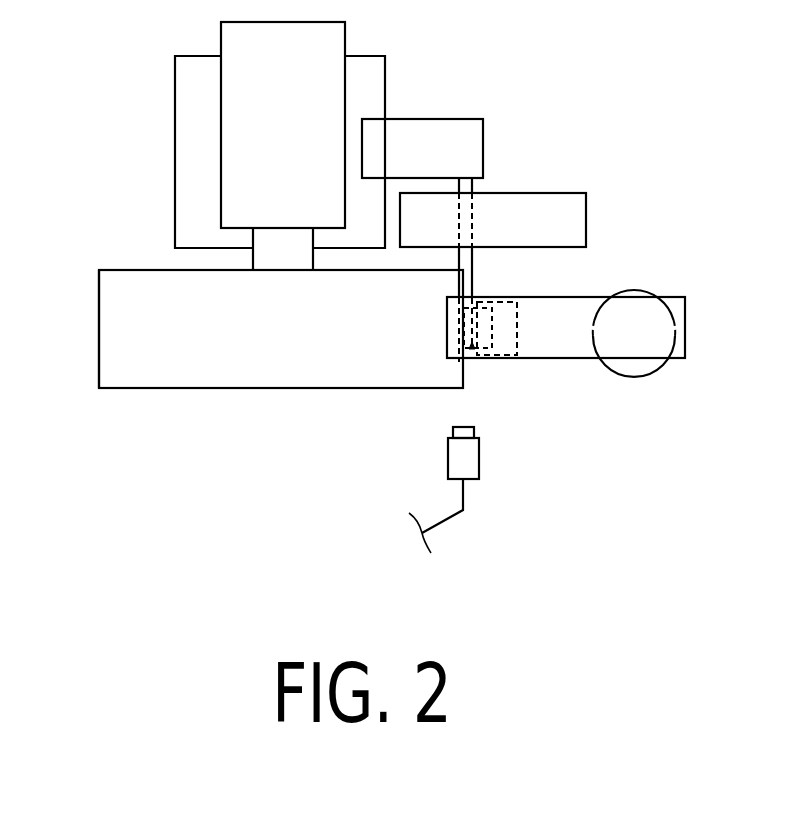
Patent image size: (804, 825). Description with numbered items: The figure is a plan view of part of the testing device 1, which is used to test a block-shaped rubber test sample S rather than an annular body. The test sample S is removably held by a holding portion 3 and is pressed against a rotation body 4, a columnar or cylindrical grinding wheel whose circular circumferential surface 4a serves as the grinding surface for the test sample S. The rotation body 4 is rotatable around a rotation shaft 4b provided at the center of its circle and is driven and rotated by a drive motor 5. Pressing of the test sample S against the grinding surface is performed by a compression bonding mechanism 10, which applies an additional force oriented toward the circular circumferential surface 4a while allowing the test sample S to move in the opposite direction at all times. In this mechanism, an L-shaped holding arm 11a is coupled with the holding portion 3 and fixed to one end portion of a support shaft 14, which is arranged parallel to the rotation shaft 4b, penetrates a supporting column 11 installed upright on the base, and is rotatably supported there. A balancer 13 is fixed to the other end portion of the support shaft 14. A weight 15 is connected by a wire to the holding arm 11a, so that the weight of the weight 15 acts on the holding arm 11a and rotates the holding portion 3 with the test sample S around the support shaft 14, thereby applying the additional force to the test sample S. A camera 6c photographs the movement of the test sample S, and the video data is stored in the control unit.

The testing device 1 is at (142, 60).
The holding portion 3 is at (500, 356).
The rotation body 4 is at (136, 268).
The circular circumferential surface 4a is at (98, 328).
The rotation shaft 4b is at (282, 238).
The drive motor 5 is at (190, 148).
The camera 6c is at (470, 460).
The compression bonding mechanism 10 is at (630, 395).
The supporting column 11 is at (530, 205).
The holding arm 11a is at (573, 348).
The balancer 13 is at (428, 133).
The support shaft 14 is at (468, 262).
The weight 15 is at (637, 292).
The test sample S is at (472, 359).